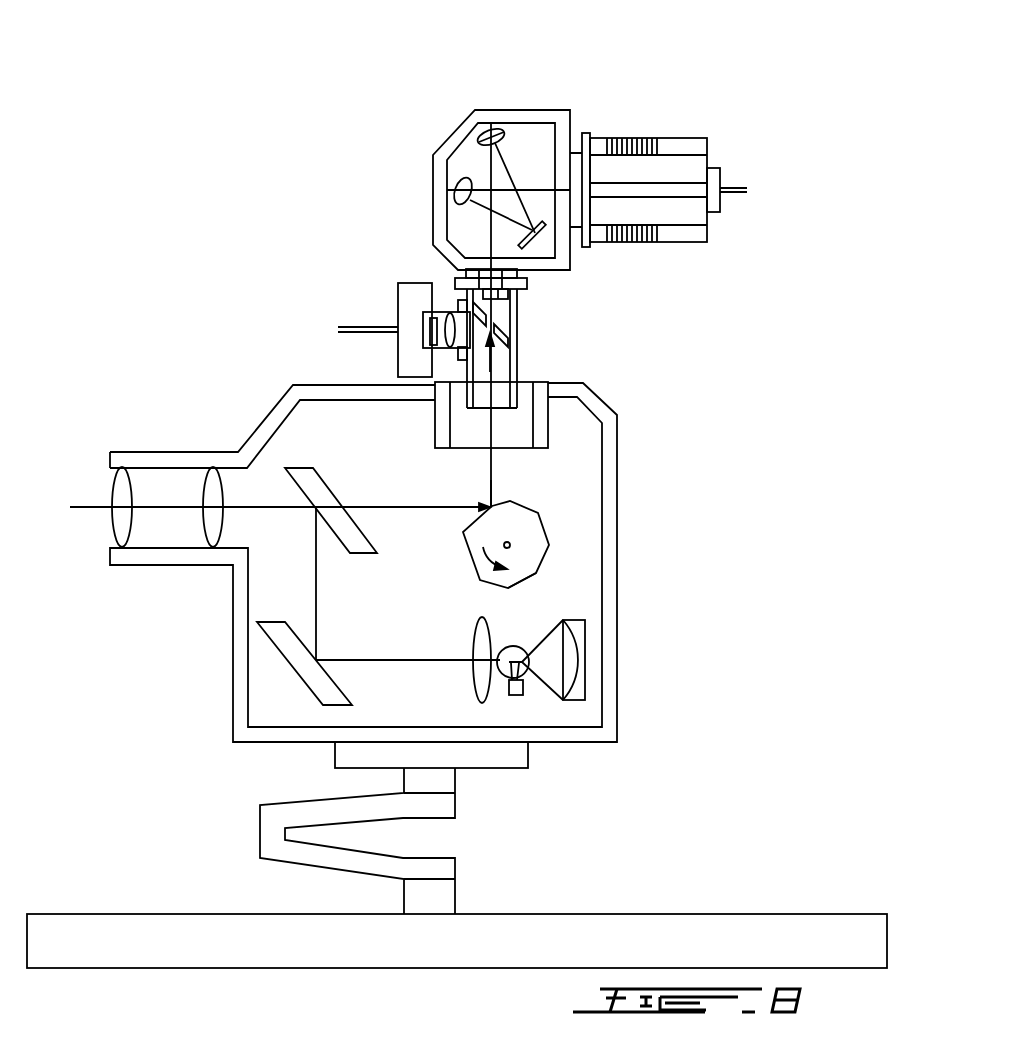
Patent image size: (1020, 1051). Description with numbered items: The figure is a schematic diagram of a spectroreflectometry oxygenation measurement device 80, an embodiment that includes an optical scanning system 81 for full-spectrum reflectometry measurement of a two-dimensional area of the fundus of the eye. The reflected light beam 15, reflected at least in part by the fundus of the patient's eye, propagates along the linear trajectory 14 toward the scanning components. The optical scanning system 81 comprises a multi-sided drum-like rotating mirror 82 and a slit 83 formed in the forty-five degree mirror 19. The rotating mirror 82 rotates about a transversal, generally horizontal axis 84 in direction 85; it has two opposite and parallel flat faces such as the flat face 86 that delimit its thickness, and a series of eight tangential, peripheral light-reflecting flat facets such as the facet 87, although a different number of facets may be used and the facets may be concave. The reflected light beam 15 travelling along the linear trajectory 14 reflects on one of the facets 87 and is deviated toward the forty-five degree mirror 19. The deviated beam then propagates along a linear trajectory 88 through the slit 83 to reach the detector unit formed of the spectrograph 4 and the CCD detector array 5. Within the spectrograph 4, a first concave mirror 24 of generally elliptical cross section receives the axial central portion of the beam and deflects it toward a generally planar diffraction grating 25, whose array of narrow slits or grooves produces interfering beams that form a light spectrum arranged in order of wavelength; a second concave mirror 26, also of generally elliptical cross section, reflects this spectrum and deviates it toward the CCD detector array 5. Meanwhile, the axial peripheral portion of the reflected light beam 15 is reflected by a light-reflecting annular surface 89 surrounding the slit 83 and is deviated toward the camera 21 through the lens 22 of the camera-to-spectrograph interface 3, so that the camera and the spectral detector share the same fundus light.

The camera-to-spectrograph interface 3 is at (497, 367).
The spectrograph 4 is at (506, 151).
The CCD detector array 5 is at (712, 226).
The linear trajectory 14 is at (178, 507).
The reflected light beam 15 is at (371, 507).
The 45° mirror 19 is at (505, 342).
The camera 21 is at (405, 352).
The lens 22 is at (448, 318).
The first concave mirror 24 is at (487, 132).
The diffraction grating 25 is at (540, 242).
The second concave mirror 26 is at (456, 192).
The spectroreflectometry oxygenation measurement device 80 is at (266, 381).
The optical scanning system 81 is at (540, 528).
The multi-sided drum-like rotating mirror 82 is at (523, 518).
The slit 83 is at (494, 318).
The axis 84 is at (512, 545).
The direction 85 is at (483, 556).
The flat face 86 is at (525, 568).
The peripheral light-reflecting flat facet 87 is at (499, 506).
The linear trajectory 88 is at (492, 395).
The light-reflecting annular surface 89 is at (496, 348).